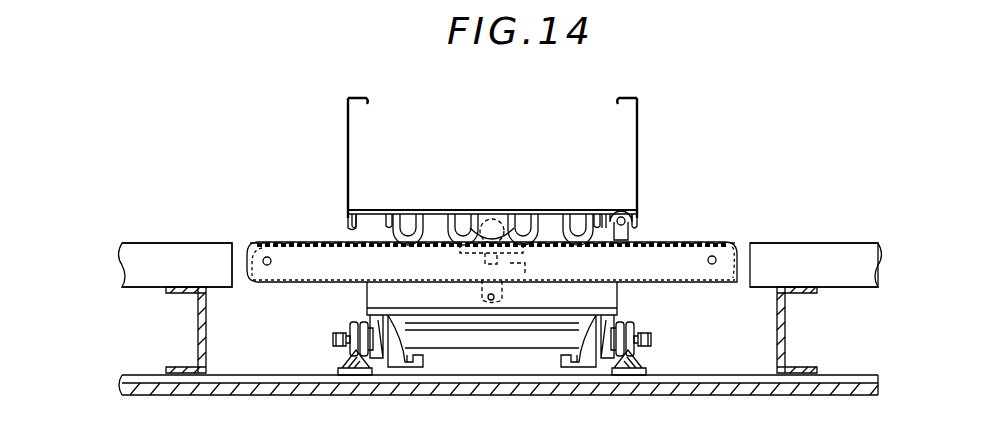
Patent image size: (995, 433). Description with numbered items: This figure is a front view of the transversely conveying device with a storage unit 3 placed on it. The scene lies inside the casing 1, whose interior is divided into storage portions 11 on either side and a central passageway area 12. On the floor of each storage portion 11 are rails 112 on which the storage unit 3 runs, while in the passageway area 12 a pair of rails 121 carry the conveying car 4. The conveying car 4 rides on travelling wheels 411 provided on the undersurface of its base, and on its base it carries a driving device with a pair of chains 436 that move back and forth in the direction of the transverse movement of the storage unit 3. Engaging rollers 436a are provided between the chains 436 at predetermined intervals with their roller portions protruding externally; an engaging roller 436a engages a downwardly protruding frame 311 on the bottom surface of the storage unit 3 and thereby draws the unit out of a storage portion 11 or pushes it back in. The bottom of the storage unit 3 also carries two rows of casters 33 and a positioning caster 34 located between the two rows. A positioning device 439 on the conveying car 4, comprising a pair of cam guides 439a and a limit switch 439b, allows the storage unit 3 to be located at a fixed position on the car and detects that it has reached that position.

The casing 1 is at (498, 385).
The storage portion 11 is at (166, 159).
The rail 112 is at (192, 262).
The passageway area 12 is at (505, 106).
The storage unit 3 is at (637, 121).
The protruding frame 311 is at (345, 222).
The caster 33 is at (538, 236).
The positioning caster 34 is at (495, 228).
The conveying car 4 is at (705, 230).
The travelling wheel 411 is at (648, 330).
The chain 436 is at (285, 240).
The engaging roller 436a is at (612, 216).
The positioning device 439 is at (419, 150).
The cam guide 439a is at (478, 228).
The limit switch 439b is at (487, 258).
The rail 121 is at (347, 360).